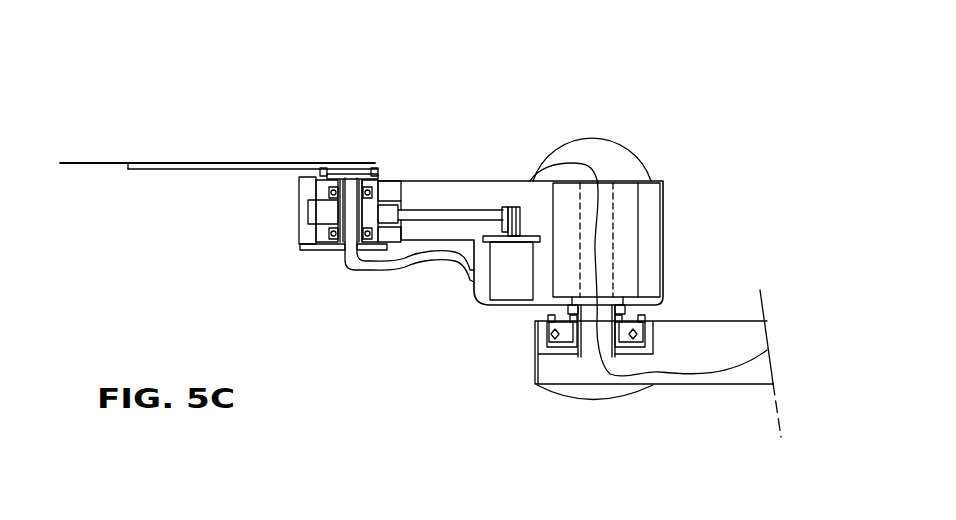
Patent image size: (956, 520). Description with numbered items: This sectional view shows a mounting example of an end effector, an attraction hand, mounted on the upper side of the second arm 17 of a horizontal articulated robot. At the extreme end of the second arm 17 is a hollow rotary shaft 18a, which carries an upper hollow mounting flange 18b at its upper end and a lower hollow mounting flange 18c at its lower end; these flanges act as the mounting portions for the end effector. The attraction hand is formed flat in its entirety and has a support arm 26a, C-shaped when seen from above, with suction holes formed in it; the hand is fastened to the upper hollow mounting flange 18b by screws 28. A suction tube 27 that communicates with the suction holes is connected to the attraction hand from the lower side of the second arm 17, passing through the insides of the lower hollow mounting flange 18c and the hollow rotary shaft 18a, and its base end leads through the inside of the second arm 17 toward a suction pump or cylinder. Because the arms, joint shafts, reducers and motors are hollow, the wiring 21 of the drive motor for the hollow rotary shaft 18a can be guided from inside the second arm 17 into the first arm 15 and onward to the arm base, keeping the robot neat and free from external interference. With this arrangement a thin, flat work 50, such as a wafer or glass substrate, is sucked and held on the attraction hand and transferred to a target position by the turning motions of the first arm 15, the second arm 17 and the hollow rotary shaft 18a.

The first arm 15 is at (715, 335).
The second arm 17 is at (500, 181).
The hollow rotary shaft 18a is at (388, 181).
The upper hollow mounting flange 18b is at (318, 170).
The lower hollow mounting flange 18c is at (317, 250).
The wiring 21 is at (587, 167).
The support arm 26a is at (177, 168).
The suction tube 27 is at (373, 272).
The screws 28 is at (375, 170).
The work 50 is at (92, 162).